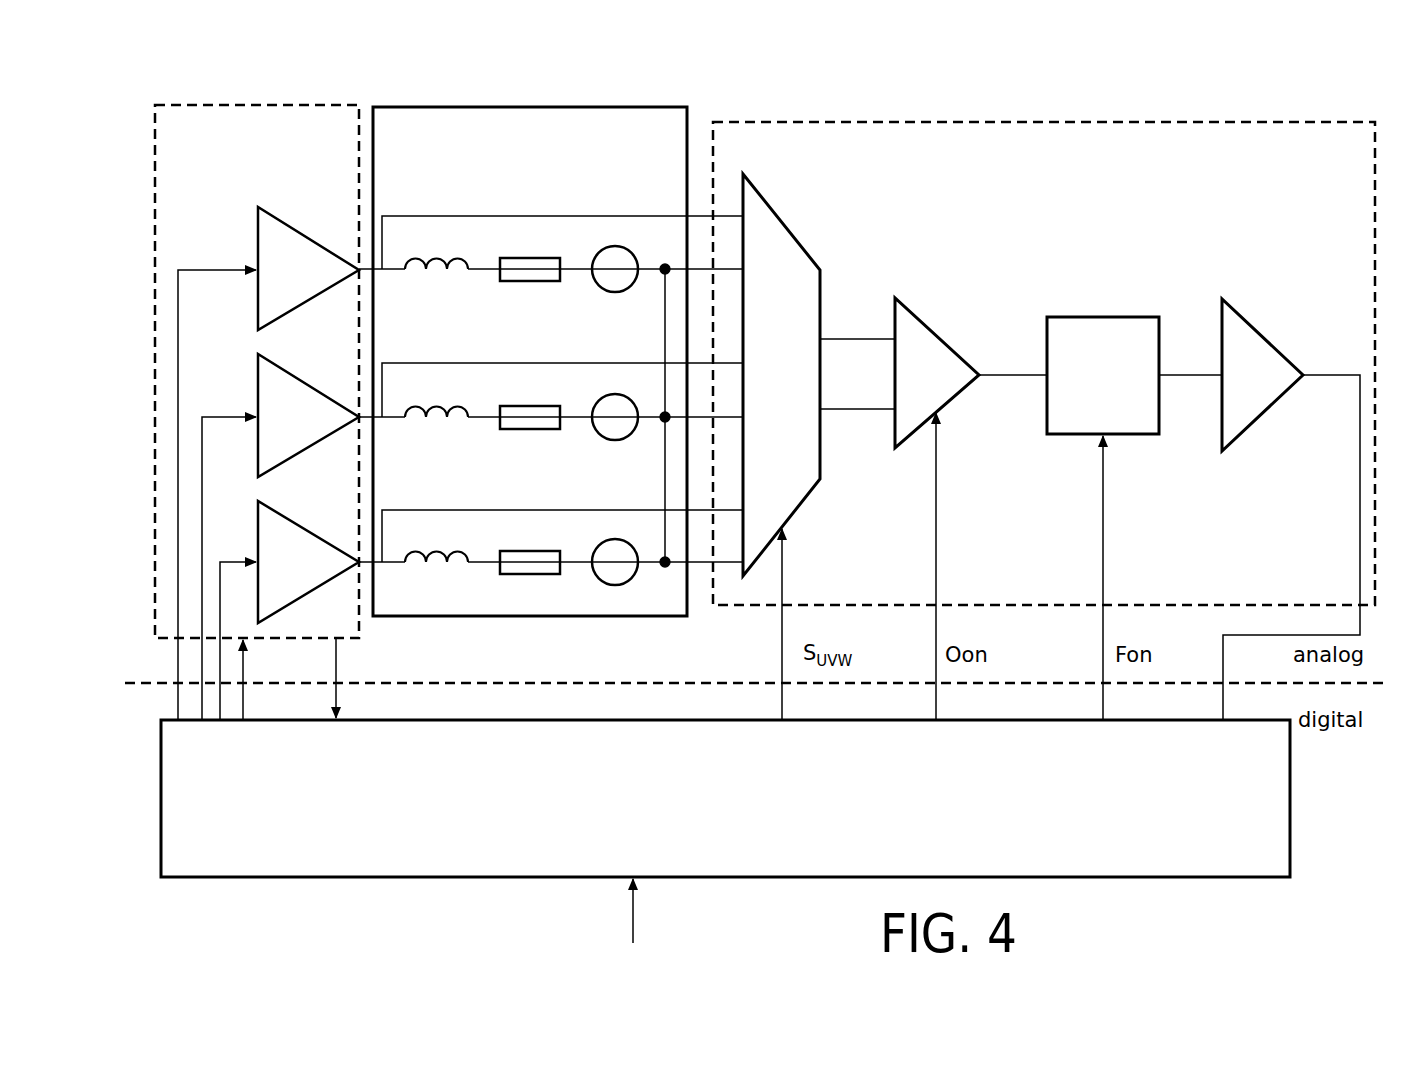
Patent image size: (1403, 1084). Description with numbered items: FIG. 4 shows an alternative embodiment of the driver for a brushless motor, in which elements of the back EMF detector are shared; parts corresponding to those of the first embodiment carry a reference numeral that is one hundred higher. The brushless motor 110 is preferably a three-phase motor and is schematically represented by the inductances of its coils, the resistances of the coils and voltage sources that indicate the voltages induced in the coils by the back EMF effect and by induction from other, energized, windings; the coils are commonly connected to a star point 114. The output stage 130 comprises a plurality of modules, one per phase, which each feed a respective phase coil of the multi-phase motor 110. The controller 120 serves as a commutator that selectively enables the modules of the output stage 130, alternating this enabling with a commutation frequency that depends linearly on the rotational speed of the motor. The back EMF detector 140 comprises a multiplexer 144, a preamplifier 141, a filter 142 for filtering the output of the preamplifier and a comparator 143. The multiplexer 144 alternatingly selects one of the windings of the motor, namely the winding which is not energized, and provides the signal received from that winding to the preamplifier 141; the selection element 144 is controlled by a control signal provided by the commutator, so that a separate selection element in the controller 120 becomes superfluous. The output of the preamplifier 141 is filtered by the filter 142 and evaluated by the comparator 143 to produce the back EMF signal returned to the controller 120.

The output stage 130 is at (275, 101).
The brushless motor 110 is at (525, 101).
The star point 114 is at (676, 567).
The back EMF detector 140 is at (935, 116).
The multiplexer 144 is at (792, 229).
The preamplifier 141 is at (941, 335).
The filter 142 is at (1102, 317).
The comparator 143 is at (1265, 334).
The controller 120 is at (1294, 807).